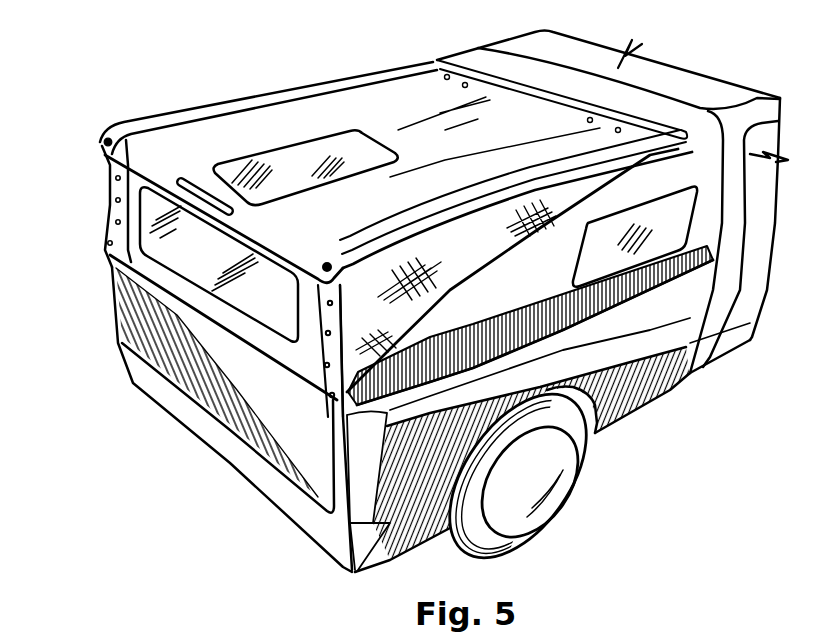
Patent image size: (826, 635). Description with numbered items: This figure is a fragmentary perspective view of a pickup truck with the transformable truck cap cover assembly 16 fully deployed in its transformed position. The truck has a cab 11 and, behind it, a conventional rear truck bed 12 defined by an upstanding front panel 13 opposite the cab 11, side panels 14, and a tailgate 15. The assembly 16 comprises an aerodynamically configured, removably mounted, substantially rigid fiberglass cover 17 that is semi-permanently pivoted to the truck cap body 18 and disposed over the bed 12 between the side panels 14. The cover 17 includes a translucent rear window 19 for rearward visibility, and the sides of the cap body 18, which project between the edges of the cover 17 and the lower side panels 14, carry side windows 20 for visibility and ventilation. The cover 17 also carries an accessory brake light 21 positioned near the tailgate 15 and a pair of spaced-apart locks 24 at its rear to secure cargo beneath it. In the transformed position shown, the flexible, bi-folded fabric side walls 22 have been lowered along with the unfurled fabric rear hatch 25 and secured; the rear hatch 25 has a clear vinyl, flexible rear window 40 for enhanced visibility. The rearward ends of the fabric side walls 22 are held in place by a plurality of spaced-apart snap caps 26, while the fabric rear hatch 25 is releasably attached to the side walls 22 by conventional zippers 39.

The cab 11 is at (513, 50).
The truck bed 12 is at (567, 362).
The front panel 13 is at (710, 307).
The side panels 14 is at (649, 333).
The tailgate 15 is at (278, 430).
The transformable truck cap cover assembly 16 is at (297, 74).
The cover 17 is at (215, 133).
The truck cap body 18 is at (625, 100).
The rear window 19 is at (366, 150).
The side windows 20 is at (688, 213).
The accessory brake light 21 is at (112, 160).
The fabric side walls 22 is at (460, 240).
The locks 24 is at (106, 138).
The fabric rear hatch 25 is at (117, 255).
The snap caps 26 is at (116, 200).
The zippers 39 is at (317, 354).
The flexible rear window 40 is at (270, 300).